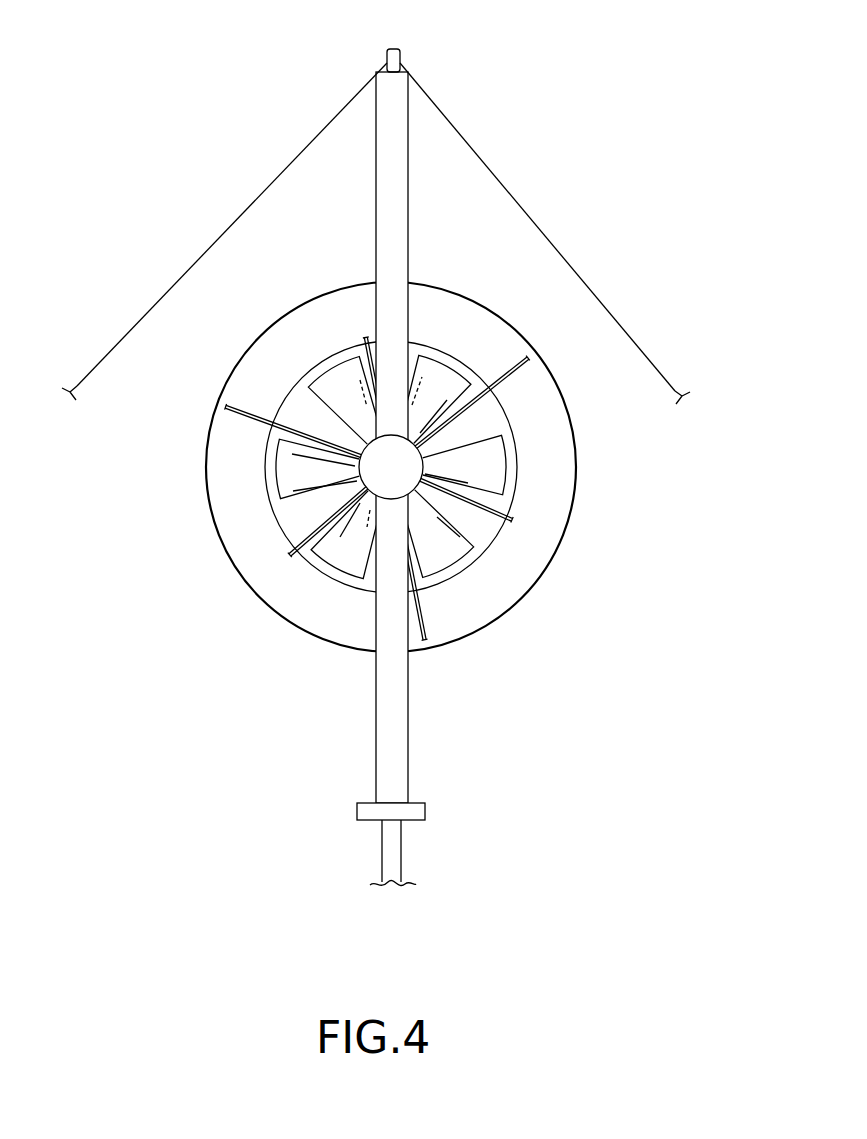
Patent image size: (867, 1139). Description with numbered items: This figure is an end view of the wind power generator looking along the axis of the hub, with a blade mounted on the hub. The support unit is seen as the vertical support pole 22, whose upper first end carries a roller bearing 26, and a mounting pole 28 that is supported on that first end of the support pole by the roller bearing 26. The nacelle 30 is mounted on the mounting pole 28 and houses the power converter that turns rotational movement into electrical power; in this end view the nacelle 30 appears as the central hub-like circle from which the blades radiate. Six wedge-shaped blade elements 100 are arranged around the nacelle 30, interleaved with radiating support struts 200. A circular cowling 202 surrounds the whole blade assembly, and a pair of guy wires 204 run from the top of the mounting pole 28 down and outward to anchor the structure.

The support pole 22 is at (401, 863).
The roller bearing 26 is at (357, 812).
The mounting pole 28 is at (408, 772).
The nacelle 30 is at (391, 467).
The blade segments 100 is at (391, 466).
The support struts 200 is at (290, 430).
The cowling 202 is at (442, 288).
The guy wire 204 is at (207, 250).